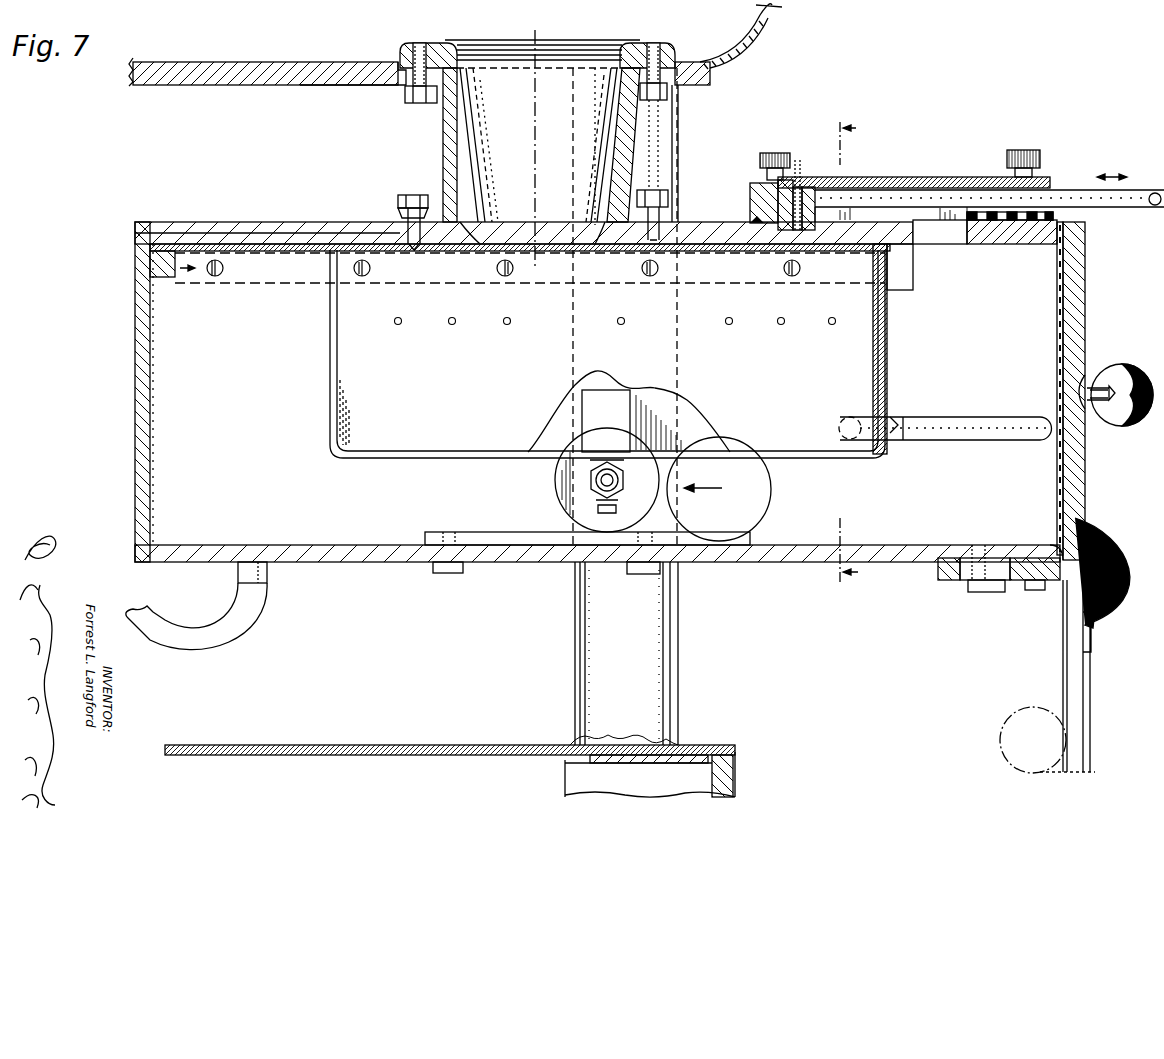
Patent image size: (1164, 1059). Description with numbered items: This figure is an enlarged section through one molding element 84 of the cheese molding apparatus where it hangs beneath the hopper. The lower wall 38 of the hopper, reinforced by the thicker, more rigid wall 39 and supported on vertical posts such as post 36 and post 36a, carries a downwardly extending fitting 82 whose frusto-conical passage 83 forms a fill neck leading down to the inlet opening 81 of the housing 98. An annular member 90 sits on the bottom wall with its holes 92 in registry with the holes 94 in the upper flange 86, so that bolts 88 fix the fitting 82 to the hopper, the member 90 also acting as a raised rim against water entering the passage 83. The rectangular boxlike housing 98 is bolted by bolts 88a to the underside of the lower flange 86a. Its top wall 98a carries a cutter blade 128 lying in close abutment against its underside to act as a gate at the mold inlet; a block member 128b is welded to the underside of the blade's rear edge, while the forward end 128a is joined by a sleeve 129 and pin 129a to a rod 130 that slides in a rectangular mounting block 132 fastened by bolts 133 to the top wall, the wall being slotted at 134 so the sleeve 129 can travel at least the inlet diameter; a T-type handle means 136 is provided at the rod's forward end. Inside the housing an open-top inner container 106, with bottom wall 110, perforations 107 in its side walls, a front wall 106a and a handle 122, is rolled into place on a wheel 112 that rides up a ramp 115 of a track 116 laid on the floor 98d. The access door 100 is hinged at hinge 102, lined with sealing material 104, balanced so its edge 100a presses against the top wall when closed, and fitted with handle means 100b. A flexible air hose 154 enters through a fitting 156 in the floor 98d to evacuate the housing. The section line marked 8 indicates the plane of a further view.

The lower wall of the hopper 38 is at (336, 62).
The reinforcing wall 39 is at (298, 85).
The vertical post 36 is at (375, 93).
The holes in annular member 92 is at (405, 48).
The bolts 88 is at (420, 43).
The holes in upper flange 94 is at (462, 87).
The upper flange 86 is at (400, 85).
The fitting 82 is at (442, 147).
The frusto-conical passage 83 is at (542, 132).
The inlet opening 81 is at (532, 233).
The annular member 90 is at (671, 55).
The boxlike housing 98 is at (346, 222).
The top wall of housing 98a is at (238, 210).
The bolts 88a is at (424, 194).
The lower flange 86a is at (406, 218).
The cutter blade 128 is at (686, 222).
The block member 128b is at (163, 277).
The forward end of cutter blade 128a is at (873, 250).
The slot 134 is at (930, 236).
The molding element 84 is at (128, 296).
The floor of housing 98d is at (382, 557).
The access door 100 is at (1088, 312).
The door edge 100a is at (1075, 221).
The handle means 100b is at (1144, 361).
The inner container 106 is at (330, 317).
The front wall of container 106a is at (884, 360).
The perforations 107 is at (447, 338).
The bottom wall of container 110 is at (435, 460).
The wheel 112 is at (555, 484).
The ramp 115 is at (673, 536).
The track 116 is at (487, 532).
The handle 122 is at (994, 418).
The fitting 156 is at (270, 572).
The flexible air hose 154 is at (252, 600).
The section line 8 is at (856, 351).
The sleeve 129 is at (805, 190).
The pin 129a is at (790, 182).
The bolts 133 is at (774, 152).
The mounting block 132 is at (910, 178).
The rod 130 is at (845, 193).
The T-type handle means 136 is at (1153, 207).
The sealing material 104 is at (1056, 538).
The hinge 102 is at (1060, 582).
The vertical post 36a is at (680, 645).